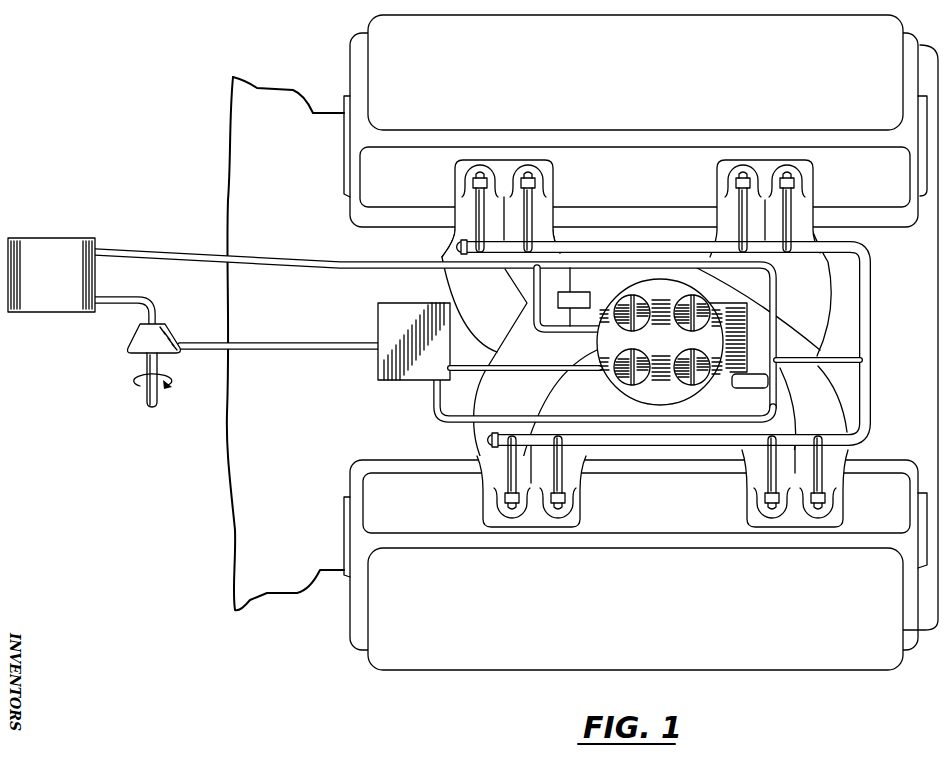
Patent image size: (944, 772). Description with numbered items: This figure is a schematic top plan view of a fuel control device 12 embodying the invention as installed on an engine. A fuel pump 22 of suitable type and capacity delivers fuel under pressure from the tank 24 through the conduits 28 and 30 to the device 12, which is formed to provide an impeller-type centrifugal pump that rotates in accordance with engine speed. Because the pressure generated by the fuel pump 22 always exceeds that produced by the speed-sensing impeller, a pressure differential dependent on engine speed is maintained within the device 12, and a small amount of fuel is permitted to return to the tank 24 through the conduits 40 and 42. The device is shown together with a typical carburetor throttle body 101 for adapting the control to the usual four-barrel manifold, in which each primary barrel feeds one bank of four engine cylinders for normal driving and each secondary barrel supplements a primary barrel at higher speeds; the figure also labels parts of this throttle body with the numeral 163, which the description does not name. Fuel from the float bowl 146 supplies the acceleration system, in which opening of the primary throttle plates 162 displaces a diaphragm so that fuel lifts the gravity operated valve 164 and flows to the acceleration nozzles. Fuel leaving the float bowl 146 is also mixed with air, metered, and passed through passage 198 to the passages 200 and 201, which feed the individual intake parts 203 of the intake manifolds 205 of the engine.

The device 12 is at (418, 386).
The fuel pump 22 is at (140, 340).
The tank 24 is at (57, 243).
The conduit 28 is at (118, 297).
The conduit 30 is at (288, 342).
The conduit 40 is at (450, 420).
The conduit 42 is at (295, 261).
The throttle body 101 is at (634, 342).
The float bowl 146 is at (740, 320).
The primary throttle plates 162 is at (712, 378).
The throttle bores 163 is at (620, 308).
The gravity operated valve 164 is at (698, 305).
The passage 198 is at (812, 366).
The passage 200 is at (597, 248).
The passage 201 is at (528, 221).
The intake parts 203 is at (540, 203).
The intake manifolds 205 is at (441, 282).